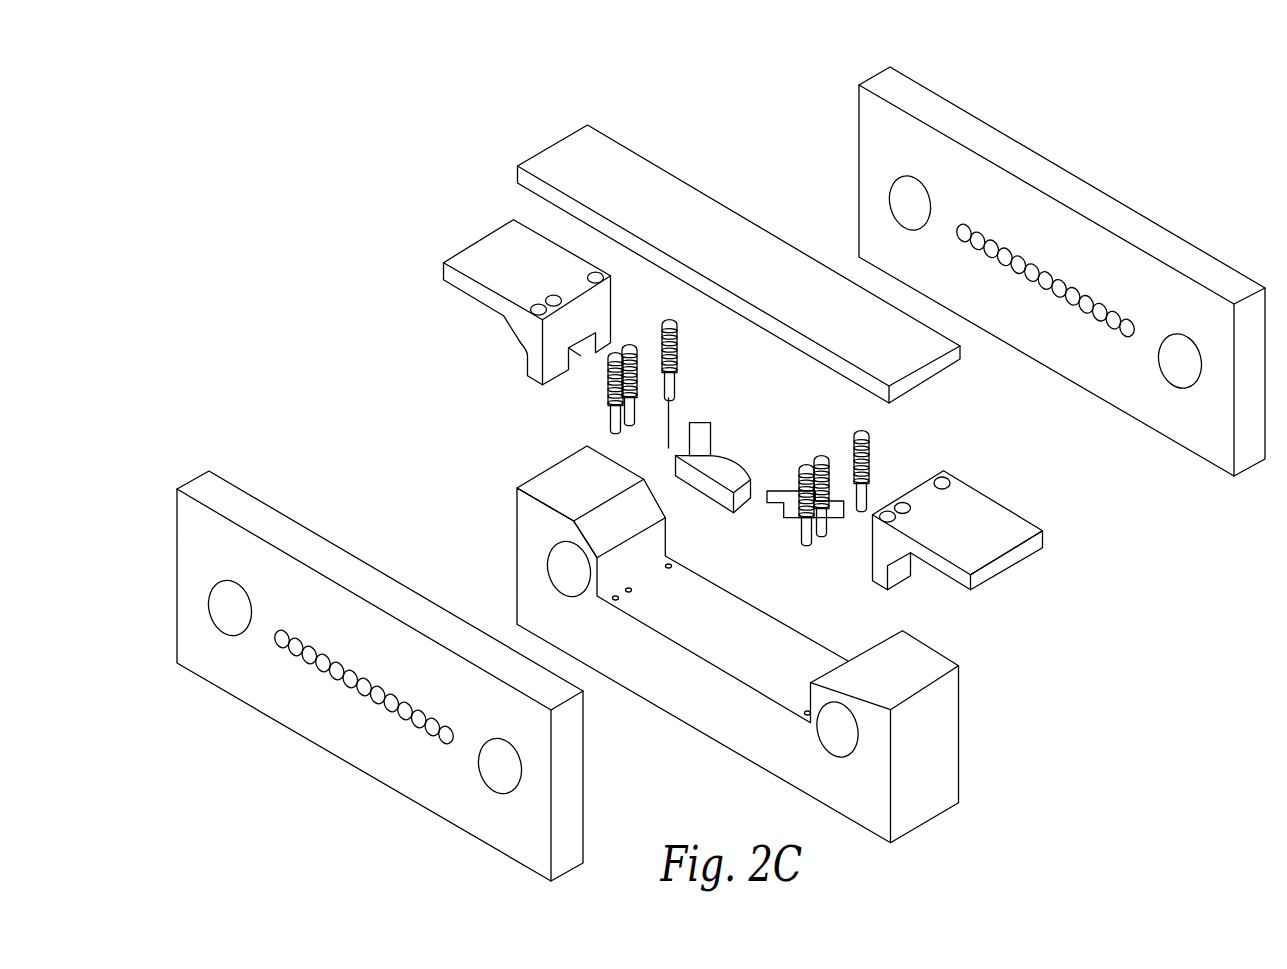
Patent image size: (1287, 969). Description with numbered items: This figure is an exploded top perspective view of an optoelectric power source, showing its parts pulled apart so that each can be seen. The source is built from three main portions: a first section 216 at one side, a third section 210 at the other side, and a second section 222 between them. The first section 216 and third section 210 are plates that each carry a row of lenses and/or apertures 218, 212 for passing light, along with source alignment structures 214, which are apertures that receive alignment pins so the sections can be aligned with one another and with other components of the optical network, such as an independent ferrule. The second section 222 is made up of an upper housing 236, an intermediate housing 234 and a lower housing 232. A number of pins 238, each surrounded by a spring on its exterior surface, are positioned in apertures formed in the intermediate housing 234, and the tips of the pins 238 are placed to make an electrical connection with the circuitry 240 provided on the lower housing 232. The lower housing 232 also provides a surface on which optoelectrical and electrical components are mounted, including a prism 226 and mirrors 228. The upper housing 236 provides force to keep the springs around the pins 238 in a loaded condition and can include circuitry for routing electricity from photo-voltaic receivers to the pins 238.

The third section 210 is at (186, 475).
The lenses and/or apertures 212 is at (275, 634).
The source alignment structures 214 is at (221, 600).
The first section 216 is at (868, 68).
The lenses and/or apertures 218 is at (953, 229).
The second section 222 is at (310, 218).
The prism 226 is at (720, 457).
The mirrors 228 is at (692, 417).
The lower housing 232 is at (542, 461).
The intermediate housing 234 is at (470, 233).
The upper housing 236 is at (546, 140).
The pins 238 is at (602, 379).
The circuitry 240 is at (606, 590).